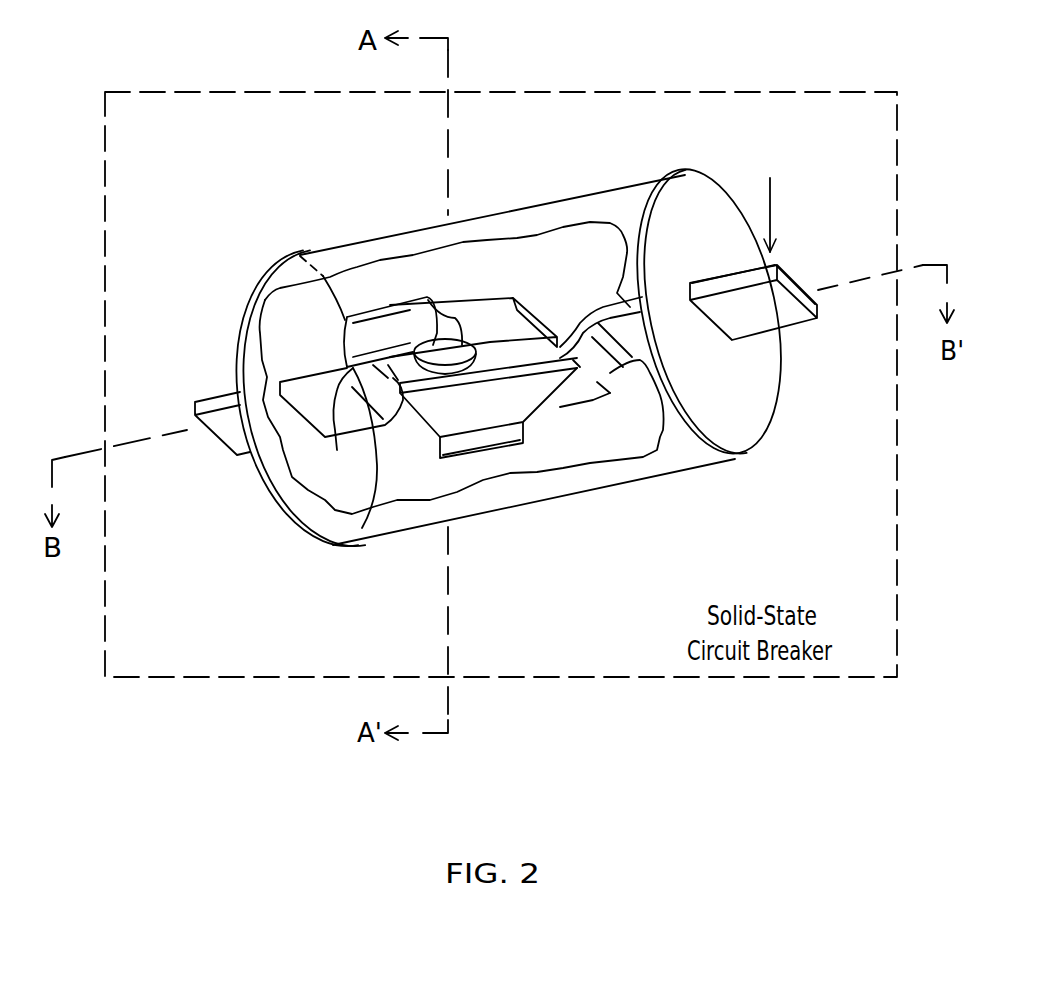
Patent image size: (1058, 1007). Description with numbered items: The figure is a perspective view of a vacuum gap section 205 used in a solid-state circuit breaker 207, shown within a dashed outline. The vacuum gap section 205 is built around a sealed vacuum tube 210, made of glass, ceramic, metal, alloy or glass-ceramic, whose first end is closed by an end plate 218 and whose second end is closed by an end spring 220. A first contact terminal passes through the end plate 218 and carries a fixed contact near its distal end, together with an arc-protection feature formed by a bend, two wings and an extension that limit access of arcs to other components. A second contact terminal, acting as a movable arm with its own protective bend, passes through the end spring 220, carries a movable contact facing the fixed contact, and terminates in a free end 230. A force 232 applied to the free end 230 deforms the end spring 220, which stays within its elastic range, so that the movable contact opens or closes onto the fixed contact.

The vacuum gap section 205 is at (262, 260).
The solid-state circuit breaker 207 is at (693, 91).
The sealed vacuum tube 210 is at (379, 537).
The end plate 218 is at (277, 288).
The end spring 220 is at (747, 407).
The free end 230 is at (793, 278).
The force 232 is at (771, 197).